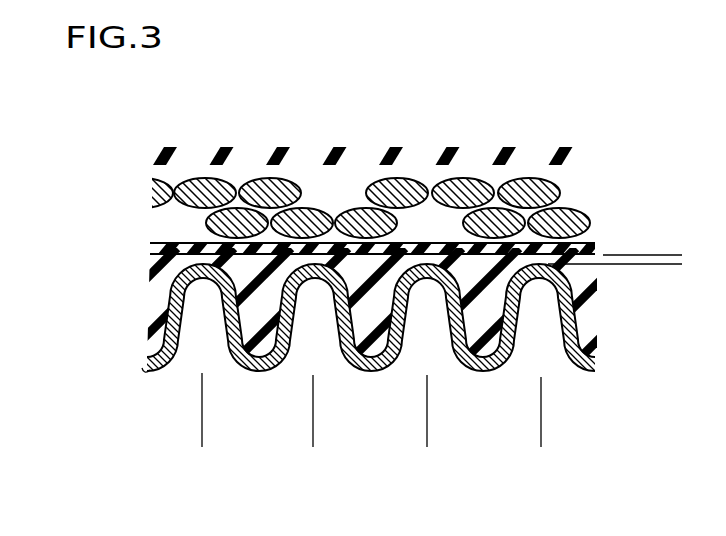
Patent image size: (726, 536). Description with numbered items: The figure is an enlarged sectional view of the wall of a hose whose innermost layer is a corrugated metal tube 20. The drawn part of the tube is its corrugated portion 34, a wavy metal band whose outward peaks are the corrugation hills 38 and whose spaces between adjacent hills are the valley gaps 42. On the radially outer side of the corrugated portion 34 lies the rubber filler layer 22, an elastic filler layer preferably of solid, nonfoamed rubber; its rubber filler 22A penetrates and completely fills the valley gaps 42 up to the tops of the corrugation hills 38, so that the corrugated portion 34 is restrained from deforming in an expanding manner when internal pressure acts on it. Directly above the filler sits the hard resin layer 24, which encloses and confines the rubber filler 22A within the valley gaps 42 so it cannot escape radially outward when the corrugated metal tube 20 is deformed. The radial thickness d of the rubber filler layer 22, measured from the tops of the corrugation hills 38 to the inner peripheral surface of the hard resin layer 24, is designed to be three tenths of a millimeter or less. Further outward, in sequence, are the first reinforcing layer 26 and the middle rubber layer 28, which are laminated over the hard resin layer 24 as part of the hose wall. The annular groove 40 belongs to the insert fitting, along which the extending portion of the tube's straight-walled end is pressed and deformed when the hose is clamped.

The corrugated metal tube 20 is at (330, 412).
The rubber filler layer 22 is at (540, 380).
The rubber filler 22A is at (248, 328).
The hard resin layer 24 is at (502, 247).
The first reinforcing layer 26 is at (570, 220).
The middle rubber layer 28 is at (532, 159).
The corrugated portion 34 is at (171, 380).
The corrugation hills 38 is at (305, 256).
The annular groove 40 is at (257, 372).
The valley gaps 42 is at (287, 365).
The radial thickness of the rubber filler layer d is at (678, 225).